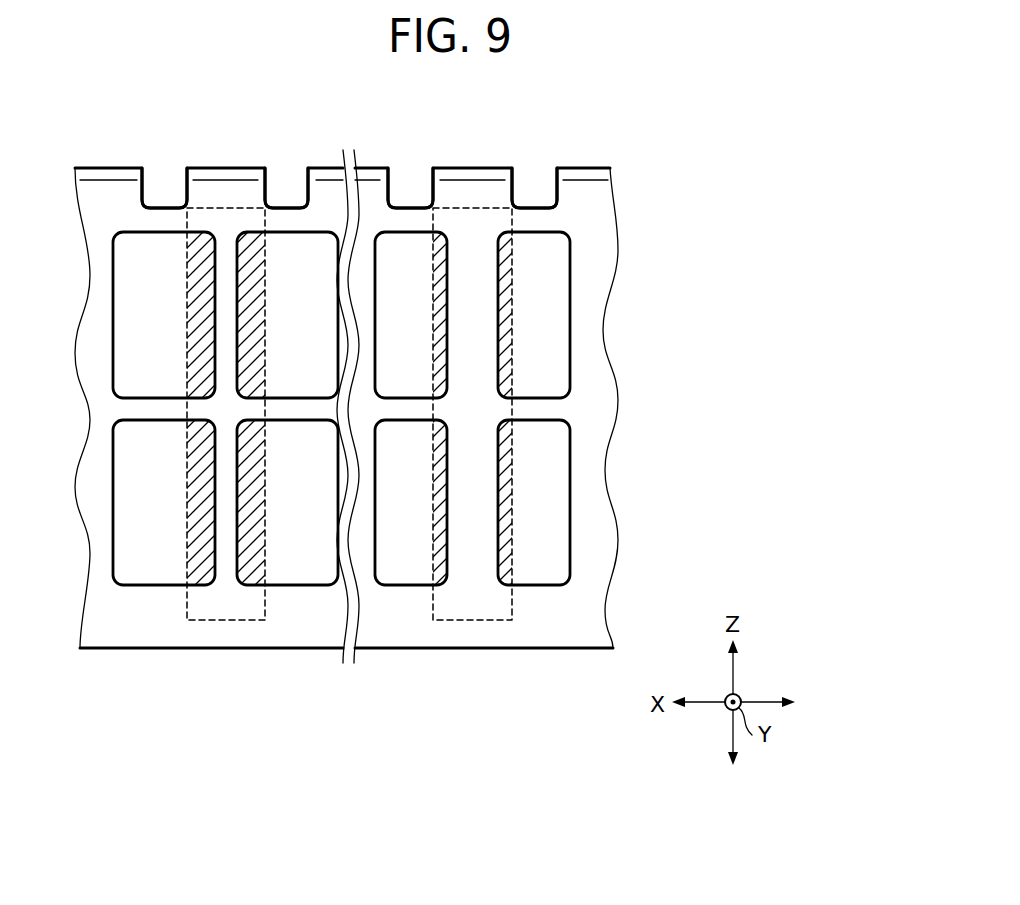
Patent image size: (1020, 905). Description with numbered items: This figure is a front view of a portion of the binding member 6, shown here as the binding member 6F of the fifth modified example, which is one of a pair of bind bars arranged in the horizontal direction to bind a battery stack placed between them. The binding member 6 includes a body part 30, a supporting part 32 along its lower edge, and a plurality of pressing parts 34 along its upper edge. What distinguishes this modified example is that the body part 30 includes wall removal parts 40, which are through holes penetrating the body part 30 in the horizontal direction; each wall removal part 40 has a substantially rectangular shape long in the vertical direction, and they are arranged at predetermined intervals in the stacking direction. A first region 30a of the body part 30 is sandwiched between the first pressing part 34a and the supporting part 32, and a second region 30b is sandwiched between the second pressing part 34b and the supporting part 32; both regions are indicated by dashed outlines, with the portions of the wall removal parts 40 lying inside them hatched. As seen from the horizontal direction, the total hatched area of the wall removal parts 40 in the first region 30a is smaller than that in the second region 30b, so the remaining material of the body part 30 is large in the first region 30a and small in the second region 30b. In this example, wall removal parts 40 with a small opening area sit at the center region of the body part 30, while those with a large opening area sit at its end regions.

The binding member 6 is at (388, 447).
The binding member according to the fifth modified example 6F is at (388, 447).
The body part 30 is at (388, 414).
The first region 30a is at (512, 223).
The second region 30b is at (180, 223).
The supporting part 32 is at (517, 630).
The pressing part 34 is at (349, 143).
The first pressing part 34a is at (468, 167).
The second pressing part 34b is at (223, 167).
The wall removal part 40 is at (570, 465).